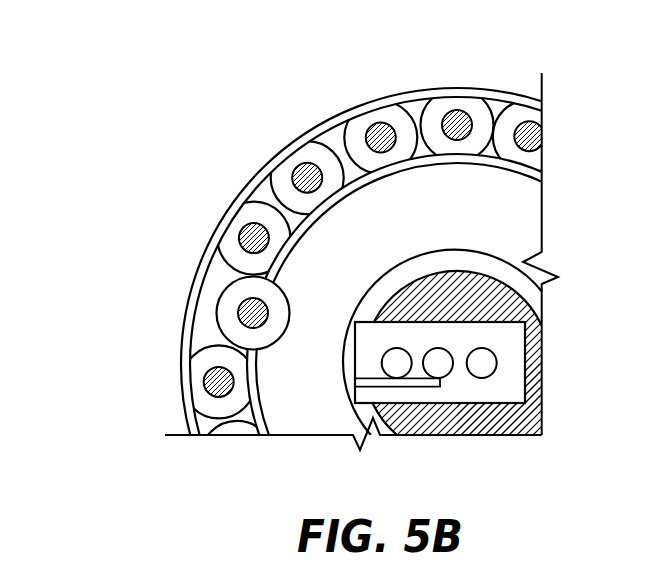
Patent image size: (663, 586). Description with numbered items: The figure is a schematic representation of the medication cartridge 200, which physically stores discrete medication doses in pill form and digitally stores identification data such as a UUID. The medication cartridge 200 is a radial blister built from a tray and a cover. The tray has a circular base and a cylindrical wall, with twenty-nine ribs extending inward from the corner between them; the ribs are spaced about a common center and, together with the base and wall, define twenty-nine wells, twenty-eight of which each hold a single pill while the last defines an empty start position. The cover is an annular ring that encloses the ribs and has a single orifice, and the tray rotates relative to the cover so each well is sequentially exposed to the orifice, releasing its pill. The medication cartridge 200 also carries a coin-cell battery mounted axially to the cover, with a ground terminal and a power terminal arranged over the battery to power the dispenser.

The medication cartridge 200 is at (146, 104).